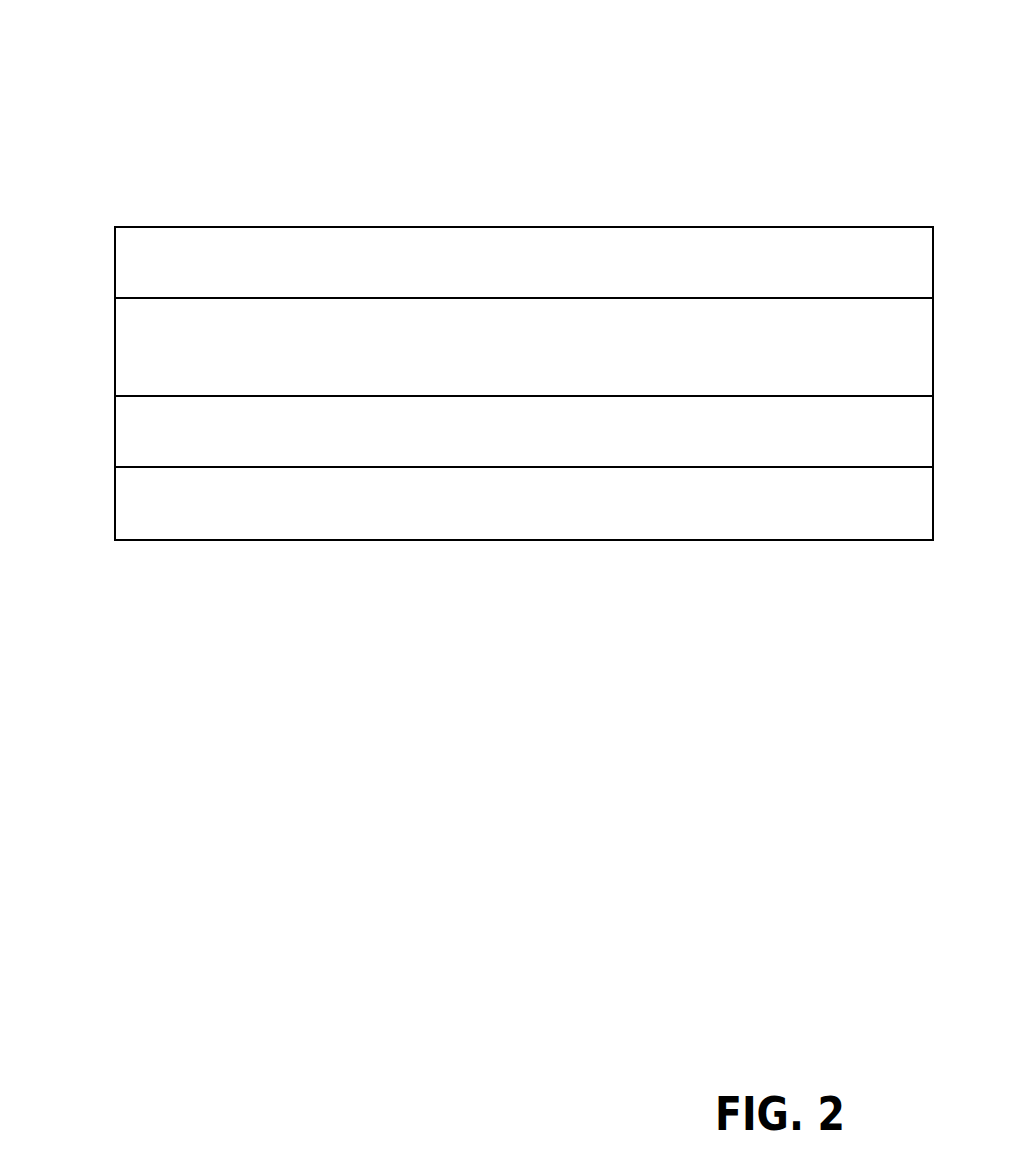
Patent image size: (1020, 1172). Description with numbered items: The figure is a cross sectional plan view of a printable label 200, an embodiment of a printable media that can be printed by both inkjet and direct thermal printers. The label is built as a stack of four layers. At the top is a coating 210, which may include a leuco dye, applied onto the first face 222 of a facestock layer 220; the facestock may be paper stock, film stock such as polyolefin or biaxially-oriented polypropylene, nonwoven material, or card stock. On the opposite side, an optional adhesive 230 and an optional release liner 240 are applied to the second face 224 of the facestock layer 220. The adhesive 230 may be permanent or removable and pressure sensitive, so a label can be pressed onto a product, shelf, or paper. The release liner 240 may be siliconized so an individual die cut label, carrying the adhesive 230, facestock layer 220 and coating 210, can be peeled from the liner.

The printable label 200 is at (633, 160).
The coating 210 is at (208, 278).
The facestock layer 220 is at (345, 333).
The first face 222 is at (193, 299).
The second face 224 is at (193, 398).
The adhesive 230 is at (495, 438).
The release liner 240 is at (650, 498).